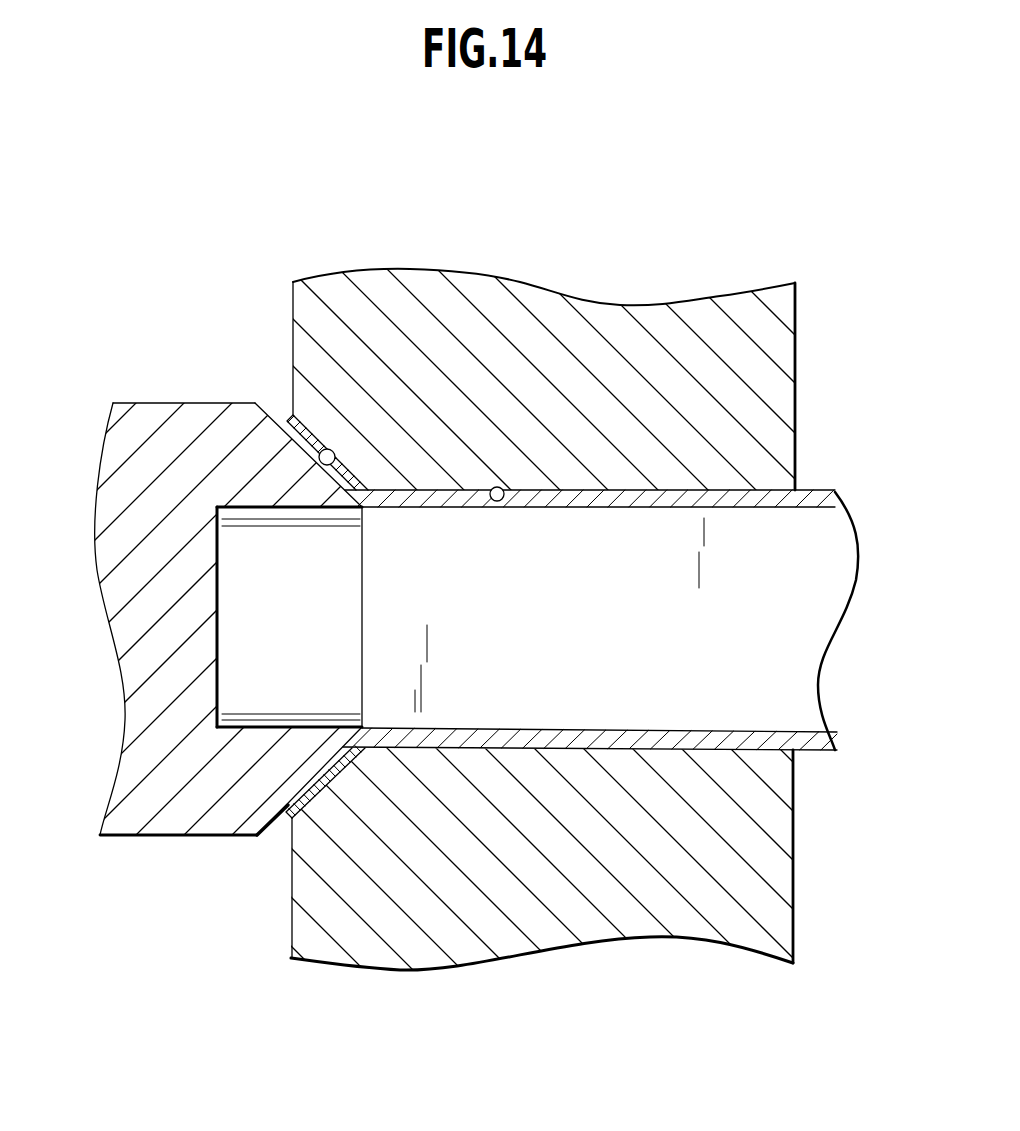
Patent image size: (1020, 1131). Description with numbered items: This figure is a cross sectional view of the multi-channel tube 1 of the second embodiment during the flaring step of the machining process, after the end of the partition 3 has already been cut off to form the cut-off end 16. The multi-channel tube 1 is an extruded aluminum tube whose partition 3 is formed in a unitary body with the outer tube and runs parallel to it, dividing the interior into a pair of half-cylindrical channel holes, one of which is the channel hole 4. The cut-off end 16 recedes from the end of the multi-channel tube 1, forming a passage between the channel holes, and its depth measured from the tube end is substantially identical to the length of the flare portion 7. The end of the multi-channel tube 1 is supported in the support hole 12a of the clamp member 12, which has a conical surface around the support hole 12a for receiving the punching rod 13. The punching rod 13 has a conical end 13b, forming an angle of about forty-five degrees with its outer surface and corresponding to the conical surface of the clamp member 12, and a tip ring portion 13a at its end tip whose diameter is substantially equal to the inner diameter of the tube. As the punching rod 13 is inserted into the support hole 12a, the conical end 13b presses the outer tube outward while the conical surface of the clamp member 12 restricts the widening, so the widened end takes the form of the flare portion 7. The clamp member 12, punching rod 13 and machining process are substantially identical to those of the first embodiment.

The multi-channel tube 1 is at (828, 486).
The partition 3 is at (838, 578).
The channel hole 4 is at (773, 731).
The flare portion 7 is at (317, 787).
The clamp member 12 is at (653, 314).
The support hole 12a is at (326, 449).
The punching rod 13 is at (130, 403).
The tip ring portion 13a is at (253, 467).
The conical end 13b is at (281, 418).
The cut-off end 16 is at (362, 616).